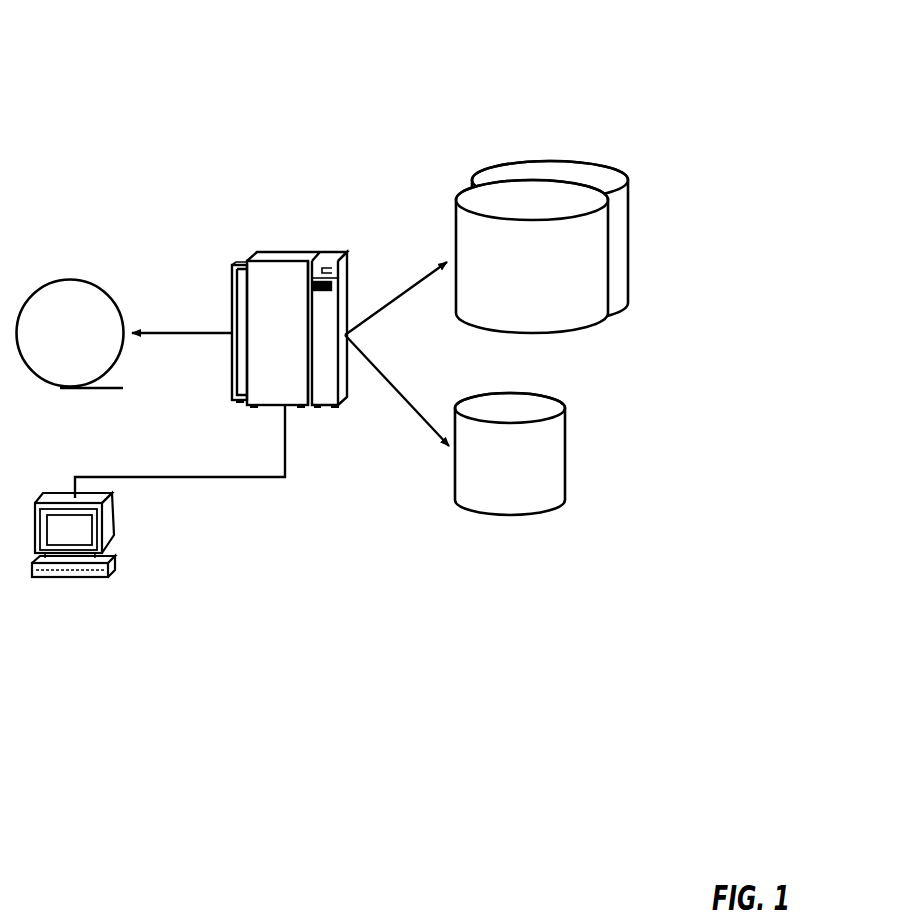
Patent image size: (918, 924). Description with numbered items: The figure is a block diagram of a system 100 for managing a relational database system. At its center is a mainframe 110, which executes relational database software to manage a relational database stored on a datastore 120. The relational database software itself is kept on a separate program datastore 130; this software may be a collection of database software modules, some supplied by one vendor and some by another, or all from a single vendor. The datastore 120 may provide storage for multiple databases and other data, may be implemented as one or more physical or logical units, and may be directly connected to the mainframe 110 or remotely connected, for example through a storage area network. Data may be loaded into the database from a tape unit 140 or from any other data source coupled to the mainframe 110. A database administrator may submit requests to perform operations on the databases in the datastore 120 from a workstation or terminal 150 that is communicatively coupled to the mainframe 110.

The system 100 is at (403, 97).
The mainframe 110 is at (285, 259).
The datastore 120 is at (538, 162).
The program datastore 130 is at (510, 515).
The tape unit 140 is at (70, 334).
The workstation or terminal 150 is at (75, 577).